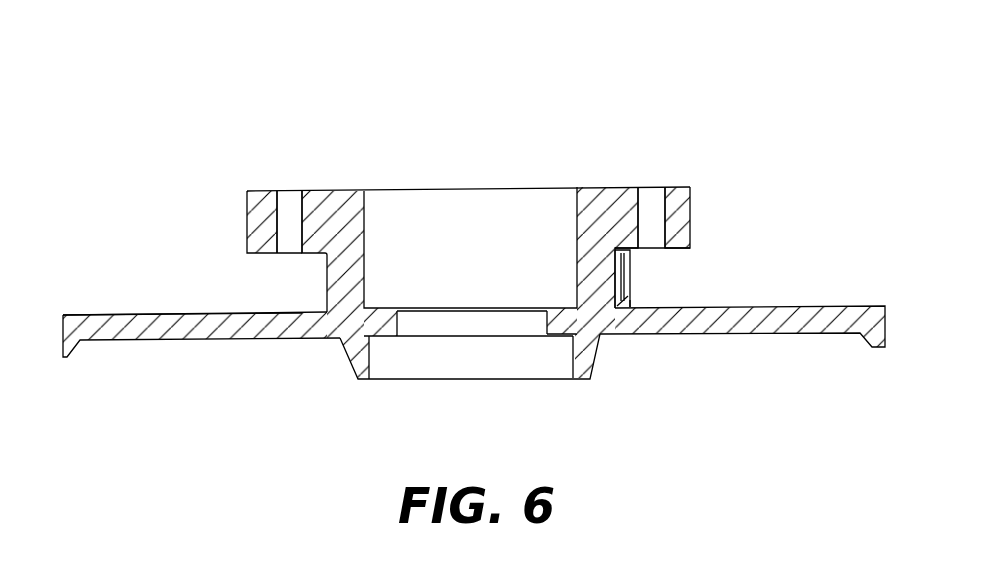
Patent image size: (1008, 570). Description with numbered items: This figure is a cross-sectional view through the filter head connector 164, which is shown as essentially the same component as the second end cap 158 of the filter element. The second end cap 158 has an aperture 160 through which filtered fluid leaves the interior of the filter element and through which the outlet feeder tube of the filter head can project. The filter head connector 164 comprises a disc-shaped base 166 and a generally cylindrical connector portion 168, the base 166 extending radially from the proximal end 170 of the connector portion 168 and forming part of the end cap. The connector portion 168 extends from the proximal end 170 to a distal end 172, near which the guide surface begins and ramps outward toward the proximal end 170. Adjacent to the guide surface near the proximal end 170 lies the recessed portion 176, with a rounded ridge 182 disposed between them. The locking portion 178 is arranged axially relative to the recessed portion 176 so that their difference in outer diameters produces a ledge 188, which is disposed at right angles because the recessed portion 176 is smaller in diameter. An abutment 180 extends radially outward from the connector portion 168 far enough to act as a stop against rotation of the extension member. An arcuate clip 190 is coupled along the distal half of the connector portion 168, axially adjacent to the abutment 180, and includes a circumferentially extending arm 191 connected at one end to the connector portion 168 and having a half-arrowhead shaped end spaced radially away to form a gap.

The second end cap 158 is at (734, 118).
The aperture 160 is at (528, 322).
The filter head connector 164 is at (193, 306).
The base 166 is at (828, 315).
The connector portion 168 is at (371, 190).
The proximal end 170 is at (240, 301).
The distal end 172 is at (231, 224).
The recessed portion 176 is at (625, 301).
The locking portion 178 is at (614, 186).
The abutment 180 is at (302, 312).
The rounded ridge 182 is at (632, 289).
The ledge 188 is at (632, 251).
The clip 190 is at (697, 197).
The circumferentially extending arm 191 is at (686, 187).